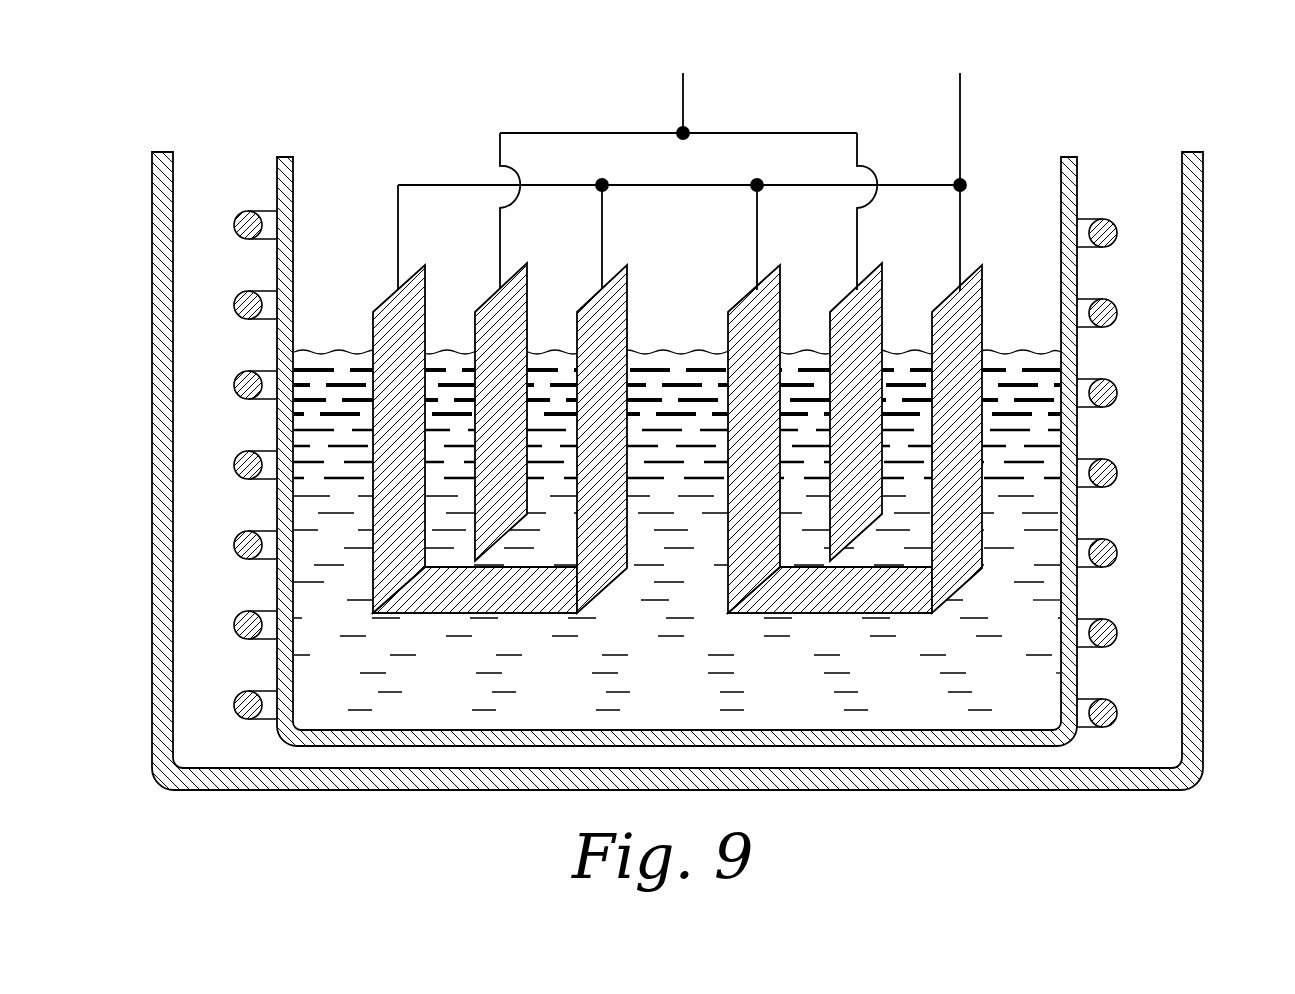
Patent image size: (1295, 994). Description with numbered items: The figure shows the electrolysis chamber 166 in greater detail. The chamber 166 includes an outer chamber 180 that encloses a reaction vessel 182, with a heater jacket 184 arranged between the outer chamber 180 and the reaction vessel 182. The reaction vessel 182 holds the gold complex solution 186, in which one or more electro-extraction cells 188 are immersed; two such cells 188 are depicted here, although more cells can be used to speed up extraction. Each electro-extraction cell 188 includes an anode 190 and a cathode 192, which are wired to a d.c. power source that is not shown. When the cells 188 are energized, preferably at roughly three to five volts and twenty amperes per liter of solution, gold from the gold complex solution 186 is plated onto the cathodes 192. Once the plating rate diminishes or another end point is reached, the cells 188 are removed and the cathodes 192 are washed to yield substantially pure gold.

The electrolysis chamber 166 is at (1050, 116).
The outer chamber 180 is at (1204, 642).
The reaction vessel 182 is at (292, 243).
The heater jacket 184 is at (235, 461).
The gold complex solution 186 is at (650, 701).
The electro-extraction cell 188 is at (487, 626).
The anode 190 is at (476, 302).
The cathode 192 is at (606, 313).